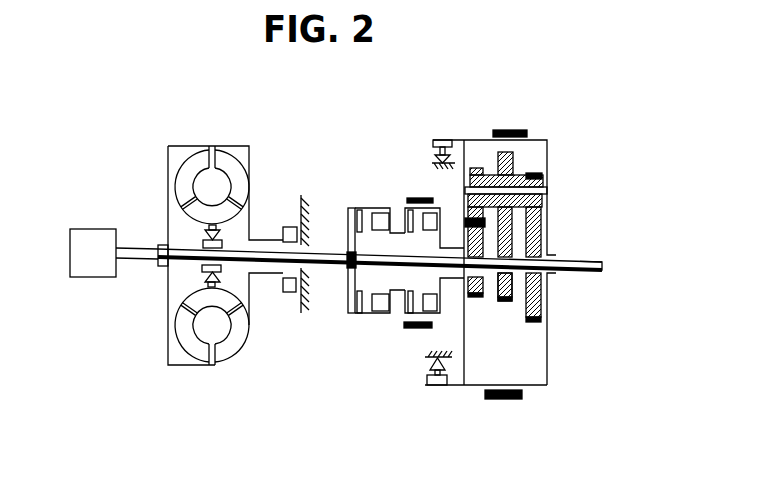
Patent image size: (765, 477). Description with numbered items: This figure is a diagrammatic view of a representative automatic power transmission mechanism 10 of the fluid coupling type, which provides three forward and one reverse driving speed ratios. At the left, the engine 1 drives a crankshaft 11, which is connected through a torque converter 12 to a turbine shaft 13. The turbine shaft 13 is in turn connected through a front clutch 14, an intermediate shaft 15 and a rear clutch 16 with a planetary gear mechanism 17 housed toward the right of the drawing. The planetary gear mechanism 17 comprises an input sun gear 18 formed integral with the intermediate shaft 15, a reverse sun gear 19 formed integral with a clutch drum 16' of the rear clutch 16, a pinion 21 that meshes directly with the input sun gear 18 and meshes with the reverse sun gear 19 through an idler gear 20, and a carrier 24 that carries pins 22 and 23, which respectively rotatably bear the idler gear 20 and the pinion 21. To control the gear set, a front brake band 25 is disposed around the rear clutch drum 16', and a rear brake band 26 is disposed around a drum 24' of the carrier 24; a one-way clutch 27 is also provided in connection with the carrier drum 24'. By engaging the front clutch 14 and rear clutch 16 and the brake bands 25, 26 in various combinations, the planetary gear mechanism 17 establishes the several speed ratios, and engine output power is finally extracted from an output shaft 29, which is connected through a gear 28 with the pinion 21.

The engine 1 is at (85, 230).
The transmission mechanism 10 is at (375, 144).
The crankshaft 11 is at (138, 248).
The torque converter 12 is at (238, 180).
The turbine shaft 13 is at (322, 265).
The front clutch 14 is at (368, 207).
The intermediate shaft 15 is at (368, 261).
The rear clutch 16 is at (413, 240).
The clutch drum 16' is at (445, 355).
The planetary gear mechanism 17 is at (500, 306).
The input sun gear 18 is at (507, 309).
The reverse sun gear 19 is at (474, 298).
The idler gear 20 is at (466, 192).
The pinion 21 is at (535, 173).
The pin 22 is at (547, 191).
The pin 23 is at (466, 220).
The carrier 24 is at (531, 226).
The carrier drum 24' is at (499, 244).
The front brake band 25 is at (413, 329).
The rear brake band 26 is at (512, 130).
The one-way clutch 27 is at (431, 160).
The gear 28 is at (541, 295).
The output shaft 29 is at (600, 273).